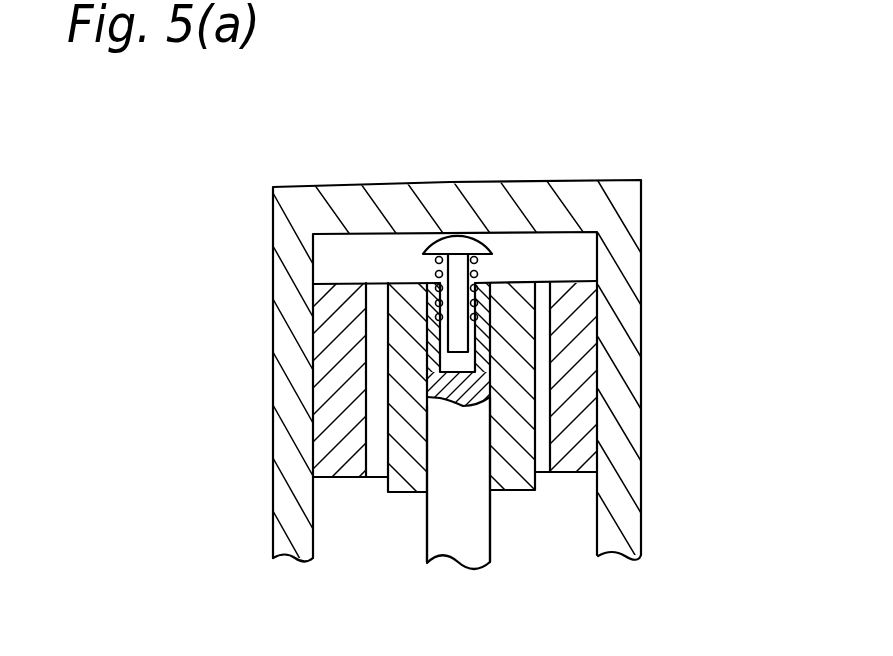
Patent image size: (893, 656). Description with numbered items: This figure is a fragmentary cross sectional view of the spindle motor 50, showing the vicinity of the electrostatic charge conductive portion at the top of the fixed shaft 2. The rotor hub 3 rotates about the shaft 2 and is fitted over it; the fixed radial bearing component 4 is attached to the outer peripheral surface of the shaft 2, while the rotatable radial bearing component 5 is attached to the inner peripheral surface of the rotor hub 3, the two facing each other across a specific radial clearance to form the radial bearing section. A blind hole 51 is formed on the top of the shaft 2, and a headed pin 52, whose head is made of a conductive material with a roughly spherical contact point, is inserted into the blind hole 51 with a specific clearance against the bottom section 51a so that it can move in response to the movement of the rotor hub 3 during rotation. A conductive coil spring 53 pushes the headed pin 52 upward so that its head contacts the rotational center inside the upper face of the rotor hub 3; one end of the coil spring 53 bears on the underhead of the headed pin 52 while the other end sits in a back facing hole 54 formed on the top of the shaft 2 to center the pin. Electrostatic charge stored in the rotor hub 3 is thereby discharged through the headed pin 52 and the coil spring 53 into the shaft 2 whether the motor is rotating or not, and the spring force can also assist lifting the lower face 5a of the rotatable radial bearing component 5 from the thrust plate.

The shaft 2 is at (468, 532).
The rotor hub 3 is at (300, 211).
The radial bearing component 4 is at (398, 370).
The rotatable radial bearing component 5 is at (330, 450).
The lower face 5a is at (327, 507).
The spindle motor 50 is at (670, 238).
The blind hole 51 is at (436, 383).
The bottom section 51a is at (462, 363).
The headed pin 52 is at (457, 242).
The coil spring 53 is at (422, 268).
The back facing hole 54 is at (485, 267).